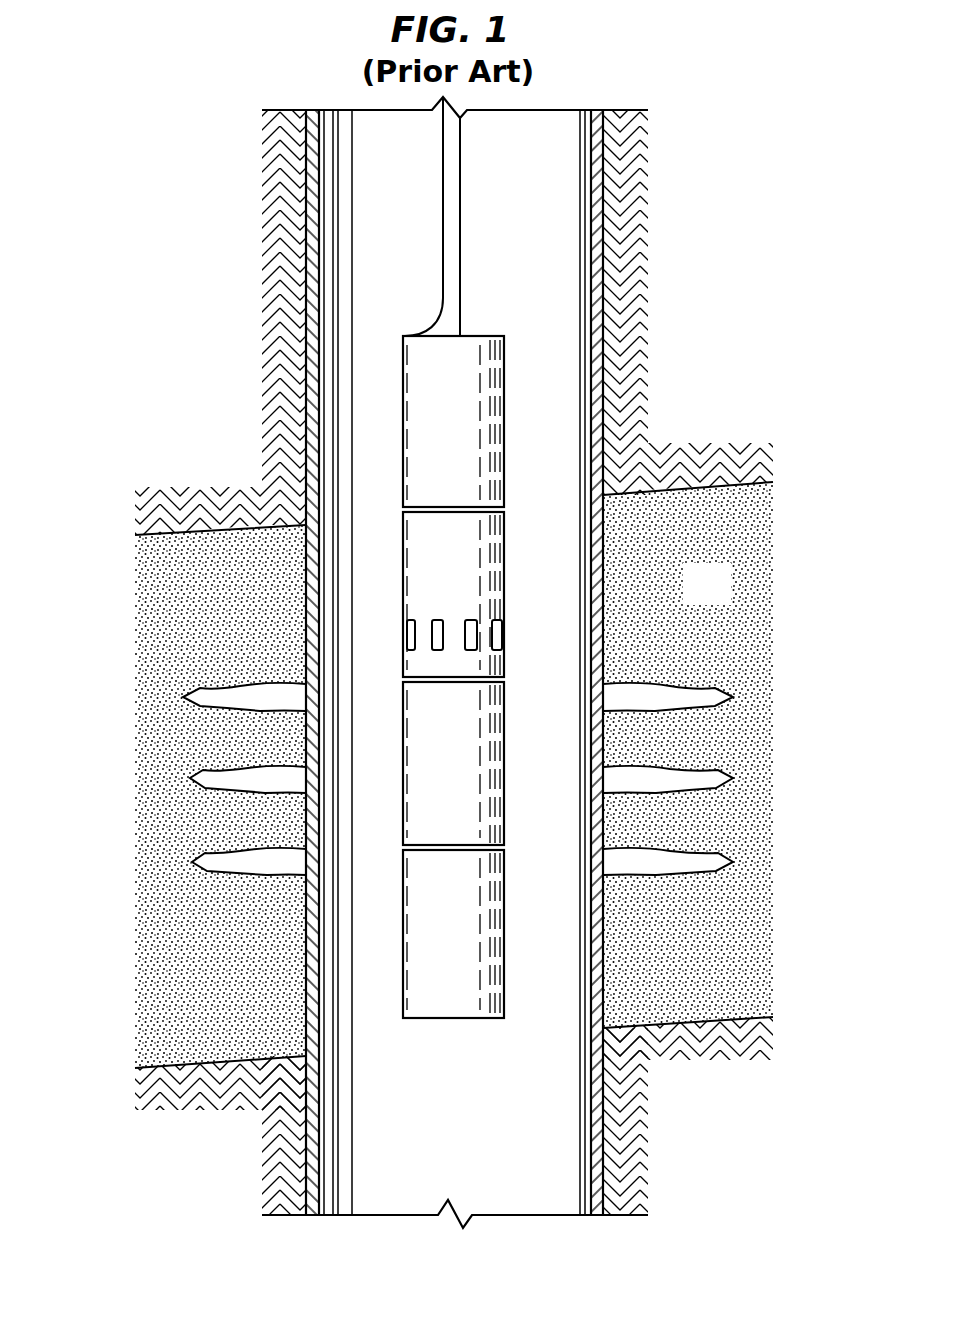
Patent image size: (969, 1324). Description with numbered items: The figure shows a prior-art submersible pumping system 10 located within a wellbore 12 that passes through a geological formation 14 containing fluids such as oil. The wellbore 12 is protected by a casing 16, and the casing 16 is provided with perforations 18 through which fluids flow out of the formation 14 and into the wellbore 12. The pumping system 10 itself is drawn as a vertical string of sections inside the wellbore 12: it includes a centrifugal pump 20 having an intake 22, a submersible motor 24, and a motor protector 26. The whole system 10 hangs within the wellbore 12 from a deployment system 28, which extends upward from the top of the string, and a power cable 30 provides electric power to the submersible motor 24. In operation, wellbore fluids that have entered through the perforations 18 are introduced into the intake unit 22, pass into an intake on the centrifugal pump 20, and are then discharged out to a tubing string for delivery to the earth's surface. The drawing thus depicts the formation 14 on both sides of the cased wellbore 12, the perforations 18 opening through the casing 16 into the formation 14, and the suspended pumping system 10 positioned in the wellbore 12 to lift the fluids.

The pumping system 10 is at (455, 557).
The wellbore 12 is at (563, 393).
The geological formation 14 is at (454, 775).
The casing 16 is at (300, 191).
The perforations 18 is at (192, 862).
The centrifugal pump 20 is at (453, 421).
The intake 22 is at (453, 594).
The submersible motor 24 is at (343, 697).
The motor protector 26 is at (453, 763).
The deployment system 28 is at (455, 223).
The power cable 30 is at (430, 326).